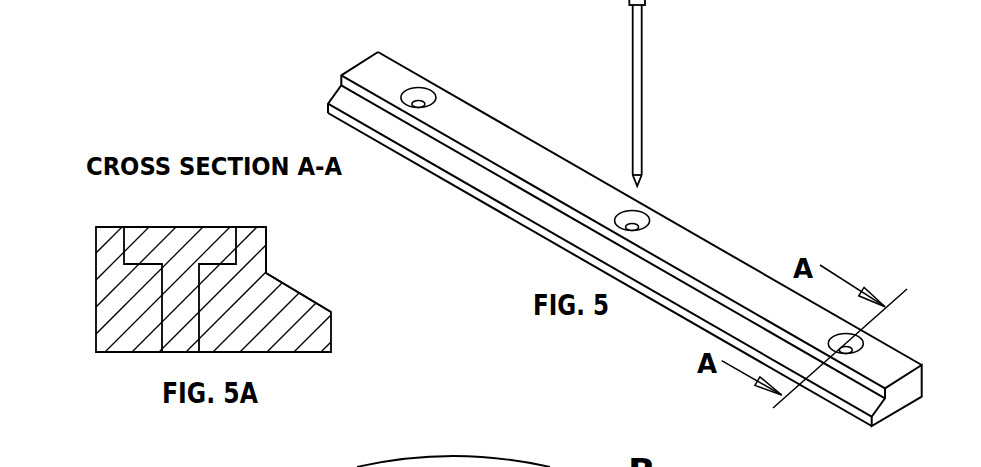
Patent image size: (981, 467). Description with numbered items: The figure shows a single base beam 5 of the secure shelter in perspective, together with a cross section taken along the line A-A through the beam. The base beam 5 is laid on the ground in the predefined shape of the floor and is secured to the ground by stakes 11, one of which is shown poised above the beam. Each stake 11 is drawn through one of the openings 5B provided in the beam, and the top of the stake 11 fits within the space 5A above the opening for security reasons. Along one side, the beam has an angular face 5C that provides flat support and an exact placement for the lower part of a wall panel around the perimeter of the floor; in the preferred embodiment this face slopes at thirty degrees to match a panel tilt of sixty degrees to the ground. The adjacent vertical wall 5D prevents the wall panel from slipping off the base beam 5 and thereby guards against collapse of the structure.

In FIG. 5, the base beam 5 is at (667, 240).
In FIG. 5A, the base beam 5 is at (233, 320).
In FIG. 5, the stake 11 is at (636, 132).
In FIG. 5A, the space 5A is at (183, 244).
In FIG. 5A, the opening 5B is at (173, 315).
In FIG. 5A, the angular face 5C is at (290, 292).
In FIG. 5A, the vertical wall 5D is at (267, 257).